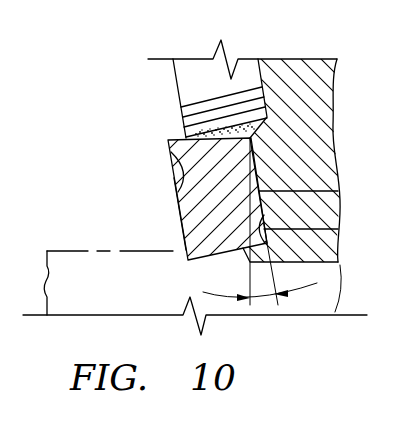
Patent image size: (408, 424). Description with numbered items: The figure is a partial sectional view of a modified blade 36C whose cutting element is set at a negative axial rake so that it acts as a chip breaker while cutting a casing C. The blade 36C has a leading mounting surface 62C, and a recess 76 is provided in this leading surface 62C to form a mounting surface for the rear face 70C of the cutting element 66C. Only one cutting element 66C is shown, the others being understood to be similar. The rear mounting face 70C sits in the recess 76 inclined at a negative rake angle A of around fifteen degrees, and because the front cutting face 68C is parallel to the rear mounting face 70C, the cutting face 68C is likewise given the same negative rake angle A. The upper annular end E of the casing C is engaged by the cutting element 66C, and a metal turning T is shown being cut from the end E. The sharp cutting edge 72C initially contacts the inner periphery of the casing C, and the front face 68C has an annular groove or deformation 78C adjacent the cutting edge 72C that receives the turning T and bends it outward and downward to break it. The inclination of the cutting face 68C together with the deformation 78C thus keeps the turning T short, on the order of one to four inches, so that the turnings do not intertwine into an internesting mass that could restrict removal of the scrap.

The modified blade 36C is at (302, 72).
The leading mounting surface 62C is at (255, 116).
The cutting edge 72C is at (167, 138).
The annular groove or deformation 78C is at (168, 166).
The cutting element 66C is at (195, 184).
The cutting face 68C is at (178, 206).
The rear mounting face 70C is at (338, 191).
The recess 76 is at (338, 229).
The negative rake angle A is at (258, 300).
The metal turning T is at (173, 251).
The upper annular end E is at (57, 250).
The casing C is at (78, 283).